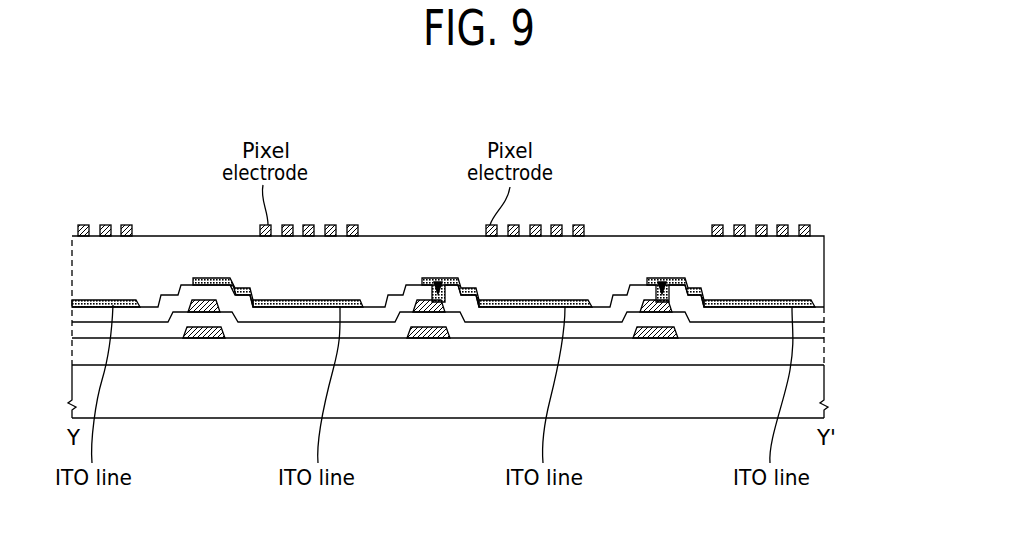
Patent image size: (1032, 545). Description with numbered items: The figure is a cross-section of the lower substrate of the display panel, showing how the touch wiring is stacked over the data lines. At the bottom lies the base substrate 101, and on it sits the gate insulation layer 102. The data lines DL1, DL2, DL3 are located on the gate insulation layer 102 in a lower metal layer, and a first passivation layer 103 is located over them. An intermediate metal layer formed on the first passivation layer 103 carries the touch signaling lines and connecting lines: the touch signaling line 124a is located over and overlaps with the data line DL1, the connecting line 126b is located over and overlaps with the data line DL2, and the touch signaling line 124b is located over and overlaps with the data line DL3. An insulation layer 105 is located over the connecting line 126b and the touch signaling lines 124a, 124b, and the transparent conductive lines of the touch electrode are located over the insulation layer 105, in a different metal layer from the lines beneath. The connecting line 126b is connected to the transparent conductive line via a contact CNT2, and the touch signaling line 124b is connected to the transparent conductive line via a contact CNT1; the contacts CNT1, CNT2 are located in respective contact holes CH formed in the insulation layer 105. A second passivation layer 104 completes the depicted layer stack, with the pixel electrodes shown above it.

The base substrate 101 is at (813, 387).
The gate insulation layer 102 is at (813, 355).
The first passivation layer 103 is at (813, 333).
The second passivation layer 104 is at (813, 270).
The insulation layer 105 is at (813, 315).
The touch signaling line 124a is at (193, 281).
The touch signaling line 124b is at (645, 300).
The connecting line 126b is at (418, 300).
The contact CNT1 is at (662, 284).
The contact CNT2 is at (438, 284).
The contact hole CH is at (443, 293).
The data line DL1 is at (207, 338).
The data line DL2 is at (433, 338).
The data line DL3 is at (660, 338).